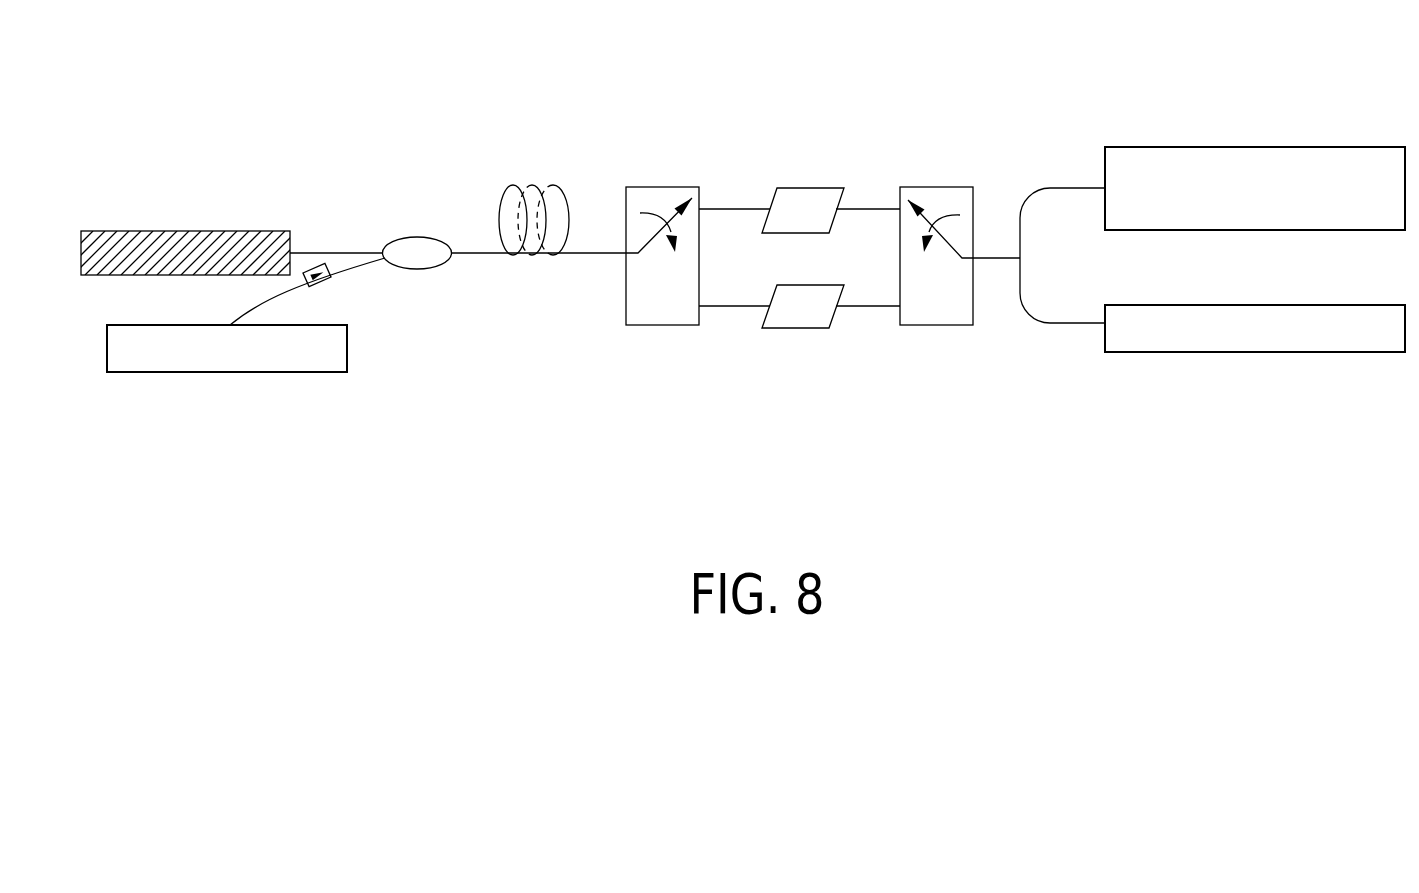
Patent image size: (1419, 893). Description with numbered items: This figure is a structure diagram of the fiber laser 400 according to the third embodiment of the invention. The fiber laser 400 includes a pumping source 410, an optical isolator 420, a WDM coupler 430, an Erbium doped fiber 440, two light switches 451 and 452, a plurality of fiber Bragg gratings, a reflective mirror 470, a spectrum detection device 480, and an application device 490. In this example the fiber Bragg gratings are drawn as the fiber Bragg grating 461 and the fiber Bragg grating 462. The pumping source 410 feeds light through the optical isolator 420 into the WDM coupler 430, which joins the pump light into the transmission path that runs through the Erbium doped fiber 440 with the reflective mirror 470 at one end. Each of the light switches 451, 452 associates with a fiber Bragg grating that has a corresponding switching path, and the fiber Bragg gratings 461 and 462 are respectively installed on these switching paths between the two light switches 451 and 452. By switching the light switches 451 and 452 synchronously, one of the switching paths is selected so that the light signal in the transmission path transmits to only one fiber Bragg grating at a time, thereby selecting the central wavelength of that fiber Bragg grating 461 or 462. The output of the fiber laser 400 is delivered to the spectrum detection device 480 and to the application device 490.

The fiber laser 400 is at (273, 41).
The pumping source 410 is at (227, 372).
The optical isolator 420 is at (322, 286).
The WDM coupler 430 is at (415, 236).
The Erbium doped fiber 440 is at (533, 185).
The light switch 451 is at (663, 187).
The light switch 452 is at (937, 187).
The fiber Bragg grating 461 is at (810, 188).
The fiber Bragg grating 462 is at (795, 328).
The reflective mirror 470 is at (193, 231).
The spectrum detection device 480 is at (1253, 146).
The application device 490 is at (1253, 353).